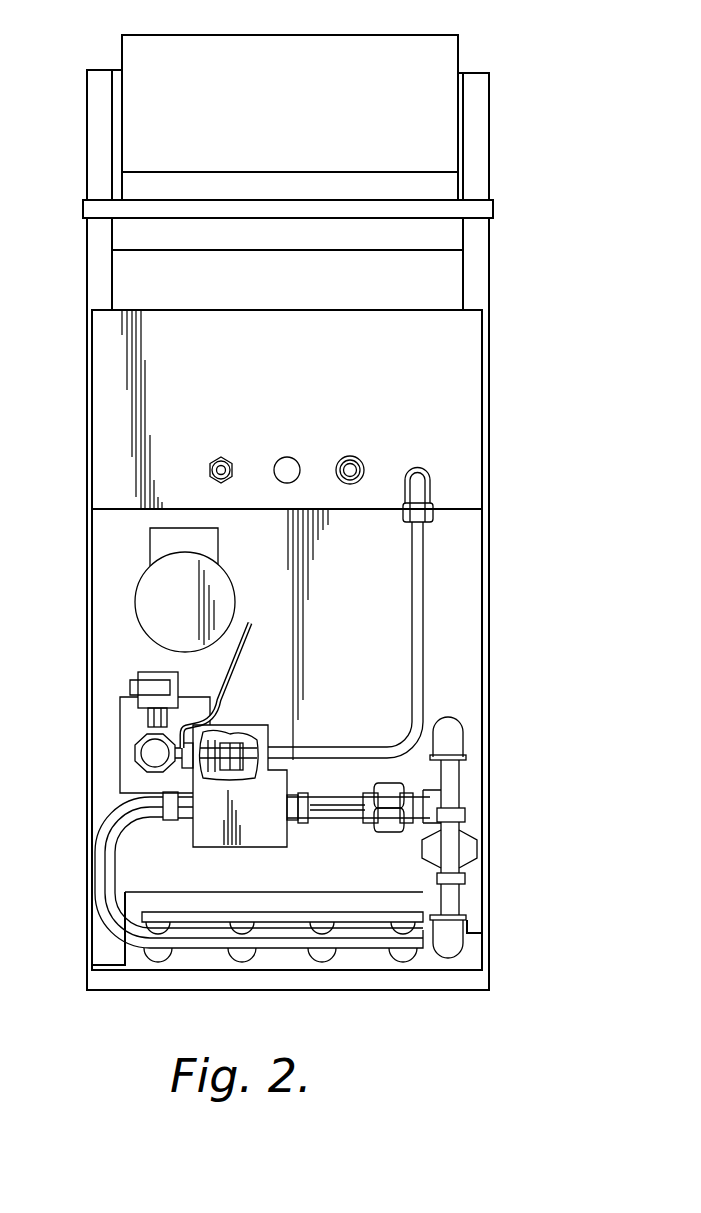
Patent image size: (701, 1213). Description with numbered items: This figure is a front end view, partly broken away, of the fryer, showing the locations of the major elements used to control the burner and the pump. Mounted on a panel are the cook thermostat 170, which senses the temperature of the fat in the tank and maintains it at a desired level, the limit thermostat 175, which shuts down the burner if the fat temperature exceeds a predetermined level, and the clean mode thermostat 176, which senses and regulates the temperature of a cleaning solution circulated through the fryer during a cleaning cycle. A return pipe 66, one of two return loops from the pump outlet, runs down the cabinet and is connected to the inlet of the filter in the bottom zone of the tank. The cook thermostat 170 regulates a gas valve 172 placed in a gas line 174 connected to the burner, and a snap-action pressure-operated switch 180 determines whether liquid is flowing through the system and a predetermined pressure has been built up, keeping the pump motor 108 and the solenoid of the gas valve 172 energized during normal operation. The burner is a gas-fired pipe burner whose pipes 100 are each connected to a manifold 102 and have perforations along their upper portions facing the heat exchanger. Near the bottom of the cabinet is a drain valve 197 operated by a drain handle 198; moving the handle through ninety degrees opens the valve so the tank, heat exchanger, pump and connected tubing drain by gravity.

The return pipe 66 is at (424, 575).
The pipes 100 is at (242, 957).
The manifold 102 is at (200, 948).
The pump motor 108 is at (142, 583).
The cook thermostat 170 is at (283, 457).
The gas valve 172 is at (268, 847).
The gas line 174 is at (348, 818).
The limit thermostat 175 is at (214, 457).
The clean mode thermostat 176 is at (350, 456).
The pressure-operated switch 180 is at (143, 668).
The drain valve 197 is at (136, 752).
The drain handle 198 is at (237, 660).